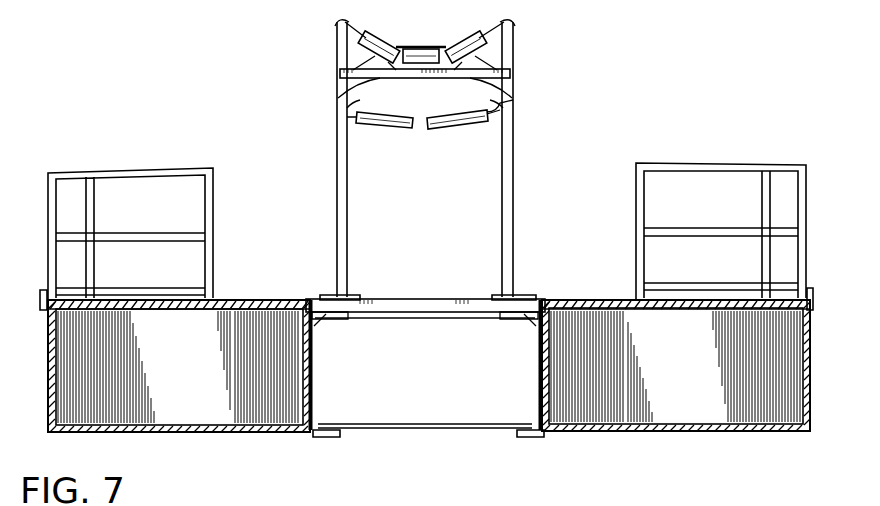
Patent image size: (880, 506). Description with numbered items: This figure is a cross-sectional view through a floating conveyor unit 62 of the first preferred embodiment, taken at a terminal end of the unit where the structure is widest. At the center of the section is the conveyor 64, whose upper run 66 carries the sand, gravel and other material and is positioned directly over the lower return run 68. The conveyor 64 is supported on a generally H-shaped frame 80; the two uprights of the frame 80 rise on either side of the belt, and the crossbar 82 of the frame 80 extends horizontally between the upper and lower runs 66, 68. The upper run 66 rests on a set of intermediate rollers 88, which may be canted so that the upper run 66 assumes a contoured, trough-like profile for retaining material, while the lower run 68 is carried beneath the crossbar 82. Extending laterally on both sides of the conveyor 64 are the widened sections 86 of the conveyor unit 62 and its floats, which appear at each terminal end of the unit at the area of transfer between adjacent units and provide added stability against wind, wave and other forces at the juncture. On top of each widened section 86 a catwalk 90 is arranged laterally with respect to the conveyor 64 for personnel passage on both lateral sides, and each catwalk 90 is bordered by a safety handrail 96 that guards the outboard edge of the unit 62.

The conveyor unit 62 is at (597, 123).
The conveyor 64 is at (416, 47).
The upper run 66 is at (433, 47).
The lower run 68 is at (424, 112).
The H-shaped frame 80 is at (337, 48).
The crossbar 82 is at (503, 71).
The widened sections 86 is at (181, 432).
The intermediate rollers 88 is at (340, 86).
The catwalk 90 is at (165, 298).
The safety handrail 96 is at (168, 170).